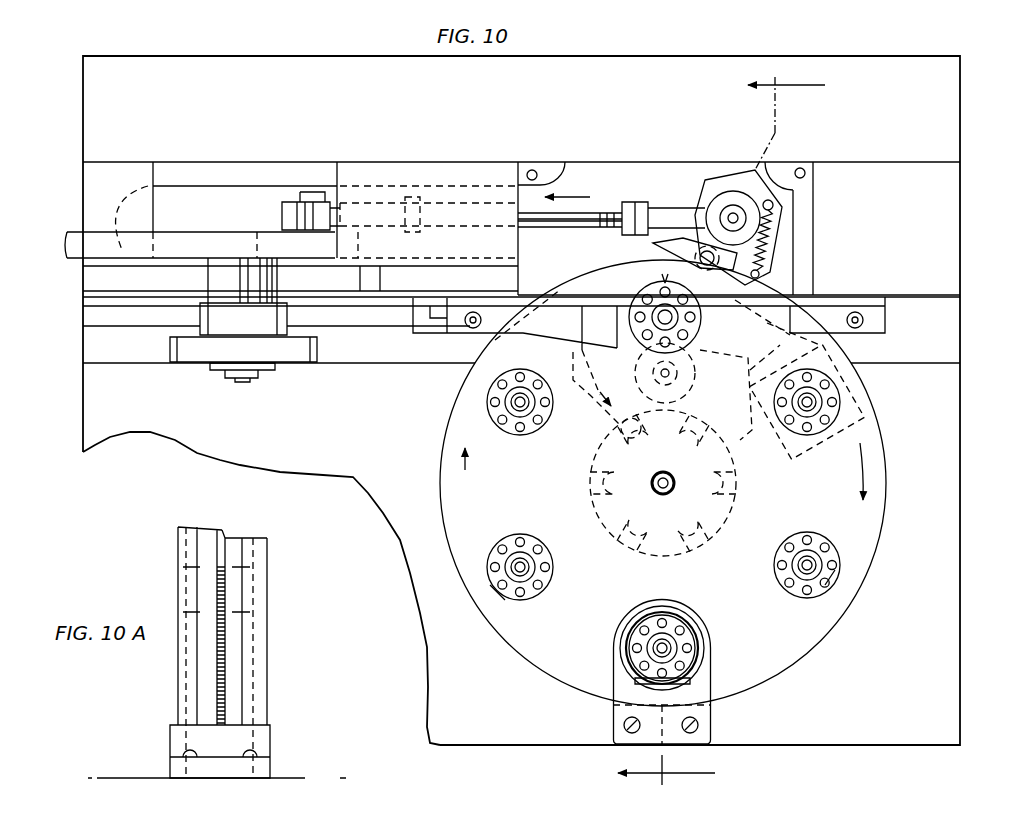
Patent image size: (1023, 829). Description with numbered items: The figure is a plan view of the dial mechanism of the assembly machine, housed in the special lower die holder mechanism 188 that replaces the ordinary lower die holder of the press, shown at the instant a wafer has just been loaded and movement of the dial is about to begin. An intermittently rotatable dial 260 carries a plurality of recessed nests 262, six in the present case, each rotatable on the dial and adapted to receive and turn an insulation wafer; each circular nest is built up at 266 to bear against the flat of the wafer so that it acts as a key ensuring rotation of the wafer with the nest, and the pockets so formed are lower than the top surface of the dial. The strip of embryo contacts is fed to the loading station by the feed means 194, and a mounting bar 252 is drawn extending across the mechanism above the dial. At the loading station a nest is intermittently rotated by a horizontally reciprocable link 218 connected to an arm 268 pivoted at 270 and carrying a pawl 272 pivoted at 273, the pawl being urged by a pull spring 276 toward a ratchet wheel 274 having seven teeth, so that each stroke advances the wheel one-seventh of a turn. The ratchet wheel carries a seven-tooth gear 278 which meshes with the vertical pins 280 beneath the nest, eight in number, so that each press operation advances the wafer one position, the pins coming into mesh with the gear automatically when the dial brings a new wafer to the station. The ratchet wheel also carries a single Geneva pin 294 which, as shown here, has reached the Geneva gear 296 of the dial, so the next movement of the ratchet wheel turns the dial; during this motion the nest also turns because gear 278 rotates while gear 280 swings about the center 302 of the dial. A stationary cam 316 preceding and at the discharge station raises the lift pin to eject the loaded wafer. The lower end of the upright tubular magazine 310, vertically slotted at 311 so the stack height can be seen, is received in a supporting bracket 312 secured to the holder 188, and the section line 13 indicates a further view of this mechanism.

In FIG. 10, the section line 13- 13 is at (721, 432).
In FIG. 10, the lower die holder mechanism 188 is at (945, 460).
In FIG. 10A, the lower die holder mechanism 188 is at (310, 776).
In FIG. 10, the feed means 194 is at (248, 392).
In FIG. 10, the horizontally reciprocable link 218 is at (600, 215).
In FIG. 10, the mounting bar 252 is at (858, 300).
In FIG. 10, the dial 260 is at (820, 635).
In FIG. 10, the recessed nest 262 is at (683, 345).
In FIG. 10, the built-up portion of nest 266 is at (492, 583).
In FIG. 10, the arm 268 is at (722, 175).
In FIG. 10, the arm pivot 270 is at (690, 398).
In FIG. 10, the pawl 272 is at (655, 255).
In FIG. 10, the pawl pivot 273 is at (706, 253).
In FIG. 10, the ratchet wheel 274 is at (748, 430).
In FIG. 10, the pull spring 276 is at (765, 258).
In FIG. 10, the gear 278 is at (705, 373).
In FIG. 10, the vertical pins 280 is at (675, 313).
In FIG. 10, the Geneva tooth or pin 294 is at (620, 400).
In FIG. 10, the Geneva gear 296 is at (738, 518).
In FIG. 10, the center of the dial 302 is at (676, 482).
In FIG. 10, the magazine 310 is at (685, 615).
In FIG. 10A, the magazine 310 is at (265, 627).
In FIG. 10A, the vertical slot 311 is at (222, 537).
In FIG. 10, the supporting bracket 312 is at (708, 712).
In FIG. 10A, the supporting bracket 312 is at (272, 735).
In FIG. 10, the stationary cam 316 is at (800, 356).